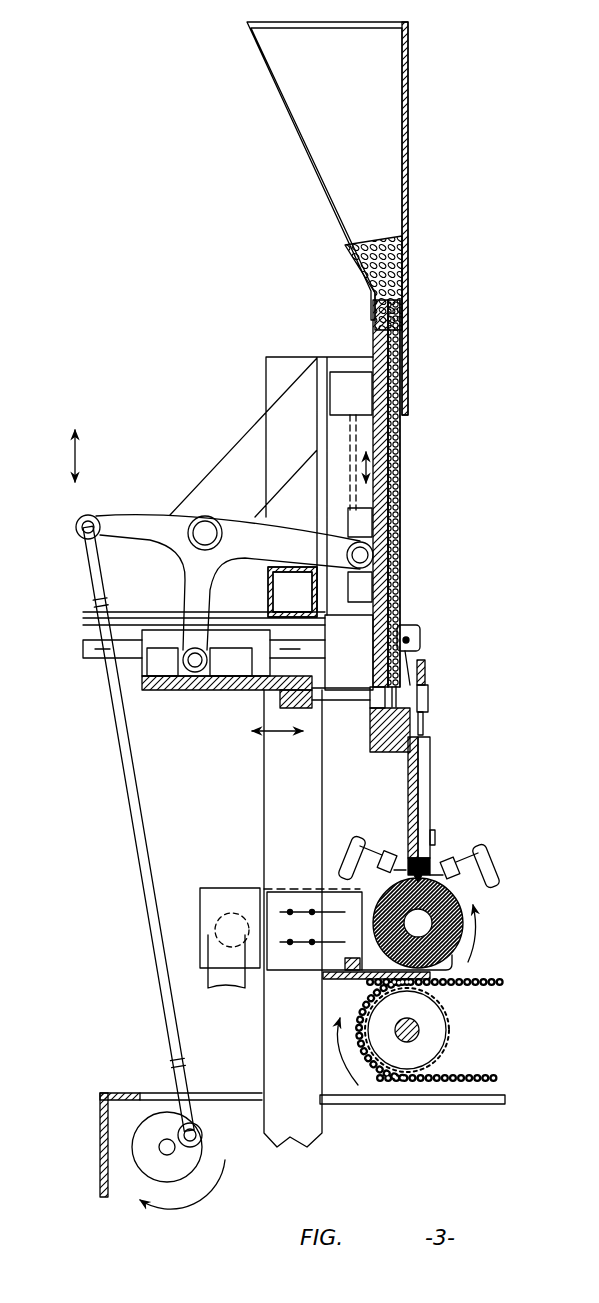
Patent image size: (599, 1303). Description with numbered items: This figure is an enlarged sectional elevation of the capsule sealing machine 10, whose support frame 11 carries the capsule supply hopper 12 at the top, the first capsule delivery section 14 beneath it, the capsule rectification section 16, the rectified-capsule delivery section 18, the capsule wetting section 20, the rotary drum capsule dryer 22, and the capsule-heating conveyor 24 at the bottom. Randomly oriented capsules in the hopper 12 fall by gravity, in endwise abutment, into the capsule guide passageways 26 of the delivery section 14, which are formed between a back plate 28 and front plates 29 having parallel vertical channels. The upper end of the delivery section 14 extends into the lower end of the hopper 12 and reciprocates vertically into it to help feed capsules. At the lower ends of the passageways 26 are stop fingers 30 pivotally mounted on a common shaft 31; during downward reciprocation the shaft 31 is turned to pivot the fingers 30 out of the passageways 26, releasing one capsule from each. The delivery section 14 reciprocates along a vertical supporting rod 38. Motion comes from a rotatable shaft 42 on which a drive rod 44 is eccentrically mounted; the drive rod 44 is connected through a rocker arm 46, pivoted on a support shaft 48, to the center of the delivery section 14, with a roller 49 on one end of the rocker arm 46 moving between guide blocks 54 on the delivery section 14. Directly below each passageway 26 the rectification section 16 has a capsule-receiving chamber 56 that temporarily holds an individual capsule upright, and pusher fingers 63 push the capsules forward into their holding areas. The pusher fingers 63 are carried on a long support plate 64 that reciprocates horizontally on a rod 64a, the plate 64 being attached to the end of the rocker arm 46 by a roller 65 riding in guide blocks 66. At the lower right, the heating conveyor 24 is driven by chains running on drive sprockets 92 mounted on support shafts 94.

The capsule sealing machine 10 is at (472, 303).
The support frame 11 is at (262, 437).
The capsule supply hopper 12 is at (408, 122).
The first capsule delivery section 14 is at (402, 470).
The capsule rectification section 16 is at (430, 685).
The rectified-capsule delivery section 18 is at (436, 776).
The capsule wetting section 20 is at (465, 848).
The rotary drum capsule dryer 22 is at (470, 922).
The capsule-heating conveyor 24 is at (510, 985).
The capsule guide passageways 26 is at (388, 540).
The back plate 28 is at (349, 652).
The front plates 29 is at (400, 452).
The stop fingers 30 is at (420, 640).
The common shaft 31 is at (407, 638).
The vertical supporting rod 38 is at (350, 455).
The rotatable shaft 42 is at (167, 1140).
The drive rod 44 is at (140, 882).
The rocker arm 46 is at (153, 517).
The support shaft 48 is at (205, 530).
The roller 49 is at (373, 555).
The guide blocks 54 is at (372, 520).
The capsule-receiving chamber 56 is at (372, 703).
The pusher fingers 63 is at (340, 710).
The support plate 64 is at (155, 690).
The rod 64a is at (95, 658).
The roller 65 is at (197, 660).
The guide blocks 66 is at (238, 662).
The drive sprockets 92 is at (445, 1043).
The support shafts 94 is at (416, 1025).